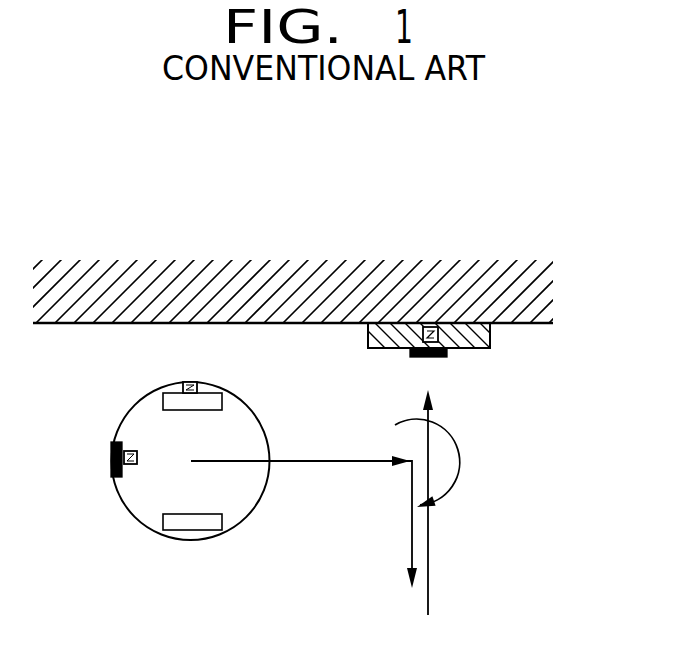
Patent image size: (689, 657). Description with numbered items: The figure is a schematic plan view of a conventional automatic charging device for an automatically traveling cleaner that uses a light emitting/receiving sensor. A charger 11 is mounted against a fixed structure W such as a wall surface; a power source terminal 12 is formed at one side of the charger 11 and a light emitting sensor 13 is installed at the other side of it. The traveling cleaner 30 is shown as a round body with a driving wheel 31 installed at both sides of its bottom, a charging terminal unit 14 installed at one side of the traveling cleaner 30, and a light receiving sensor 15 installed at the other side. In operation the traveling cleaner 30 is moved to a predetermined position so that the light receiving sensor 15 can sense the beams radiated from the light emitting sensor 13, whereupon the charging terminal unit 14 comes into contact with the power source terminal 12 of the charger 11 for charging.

The fixed structure W is at (126, 276).
The charger 11 is at (483, 338).
The light emitting sensor 13 is at (440, 340).
The power source terminal 12 is at (440, 357).
The traveling cleaner 30 is at (137, 510).
The driving wheel 31 is at (195, 525).
The light receiving sensor 15 is at (183, 385).
The charging terminal unit 14 is at (111, 460).